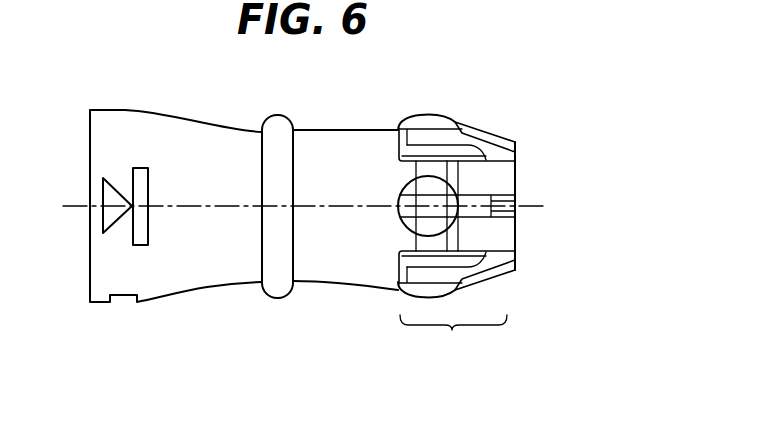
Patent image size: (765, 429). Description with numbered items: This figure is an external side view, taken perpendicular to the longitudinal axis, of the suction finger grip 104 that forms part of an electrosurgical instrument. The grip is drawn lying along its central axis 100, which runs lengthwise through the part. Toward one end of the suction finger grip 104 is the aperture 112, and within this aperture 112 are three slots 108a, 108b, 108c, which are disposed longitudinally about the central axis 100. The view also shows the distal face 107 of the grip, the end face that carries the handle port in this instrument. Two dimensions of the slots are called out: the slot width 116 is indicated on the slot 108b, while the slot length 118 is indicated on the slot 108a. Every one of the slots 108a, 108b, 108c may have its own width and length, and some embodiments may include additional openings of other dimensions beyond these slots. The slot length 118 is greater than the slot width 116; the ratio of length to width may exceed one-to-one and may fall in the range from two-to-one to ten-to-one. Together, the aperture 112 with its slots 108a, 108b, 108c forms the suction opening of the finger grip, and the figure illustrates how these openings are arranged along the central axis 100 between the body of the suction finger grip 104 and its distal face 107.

The central axis 100 is at (357, 201).
The suction finger grip 104 is at (117, 66).
The distal face 107 is at (524, 240).
The slot 108a is at (388, 108).
The slot 108b is at (417, 161).
The slot 108c is at (395, 255).
The aperture 112 is at (453, 336).
The slot width 116 is at (443, 214).
The slot length 118 is at (438, 148).